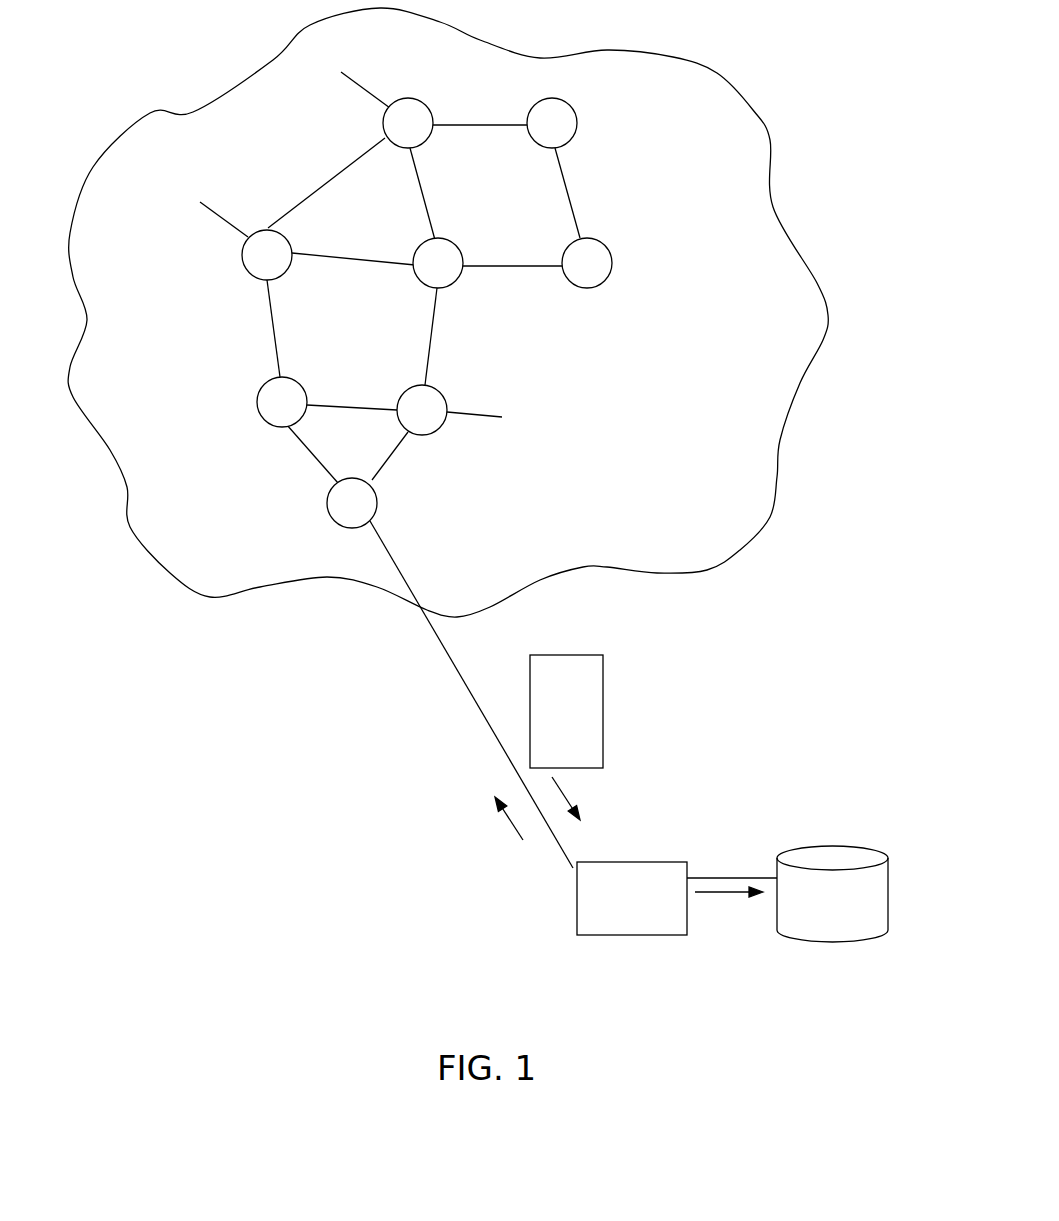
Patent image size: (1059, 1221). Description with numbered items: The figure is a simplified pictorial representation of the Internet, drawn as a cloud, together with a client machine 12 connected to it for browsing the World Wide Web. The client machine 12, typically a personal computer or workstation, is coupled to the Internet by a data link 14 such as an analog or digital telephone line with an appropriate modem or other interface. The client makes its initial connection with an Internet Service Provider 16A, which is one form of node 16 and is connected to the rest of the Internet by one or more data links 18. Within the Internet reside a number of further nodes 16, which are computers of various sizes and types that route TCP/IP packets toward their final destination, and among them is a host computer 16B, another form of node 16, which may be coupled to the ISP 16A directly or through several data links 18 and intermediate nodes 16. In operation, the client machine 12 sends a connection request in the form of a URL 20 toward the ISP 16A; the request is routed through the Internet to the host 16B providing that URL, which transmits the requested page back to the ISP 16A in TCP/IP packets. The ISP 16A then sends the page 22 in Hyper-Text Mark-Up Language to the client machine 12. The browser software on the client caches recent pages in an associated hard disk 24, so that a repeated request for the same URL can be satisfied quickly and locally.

The client machine 12 is at (688, 862).
The data link 14 is at (463, 688).
The node 16 is at (245, 268).
The Internet Service Provider 16A is at (377, 503).
The host computer 16B is at (395, 150).
The data link 18 is at (343, 173).
The URL 20 is at (480, 850).
The page 22 is at (603, 705).
The hard disk 24 is at (878, 853).